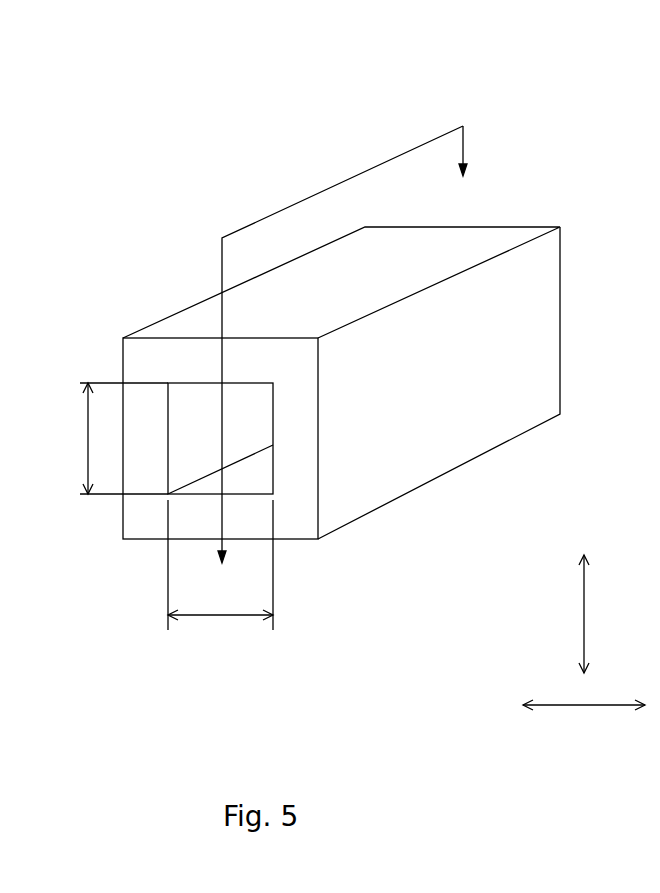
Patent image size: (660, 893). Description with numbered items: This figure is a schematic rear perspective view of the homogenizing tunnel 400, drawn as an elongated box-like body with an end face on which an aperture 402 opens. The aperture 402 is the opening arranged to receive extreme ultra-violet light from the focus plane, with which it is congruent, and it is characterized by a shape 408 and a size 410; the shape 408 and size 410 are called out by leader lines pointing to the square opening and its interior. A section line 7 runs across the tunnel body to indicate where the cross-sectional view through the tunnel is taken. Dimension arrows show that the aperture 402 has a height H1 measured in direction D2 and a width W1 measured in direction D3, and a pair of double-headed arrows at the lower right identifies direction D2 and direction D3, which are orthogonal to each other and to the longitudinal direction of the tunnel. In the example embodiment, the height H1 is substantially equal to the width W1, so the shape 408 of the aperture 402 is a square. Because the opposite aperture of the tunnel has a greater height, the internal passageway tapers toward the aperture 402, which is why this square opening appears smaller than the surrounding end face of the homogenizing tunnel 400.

The homogenizing tunnel 400 is at (382, 118).
The aperture 402 is at (295, 442).
The shape 408 is at (203, 383).
The size 410 is at (182, 417).
The line 7- 7 is at (343, 362).
The height H1 is at (86, 438).
The width W1 is at (220, 618).
The direction D2 is at (584, 613).
The direction D3 is at (582, 705).